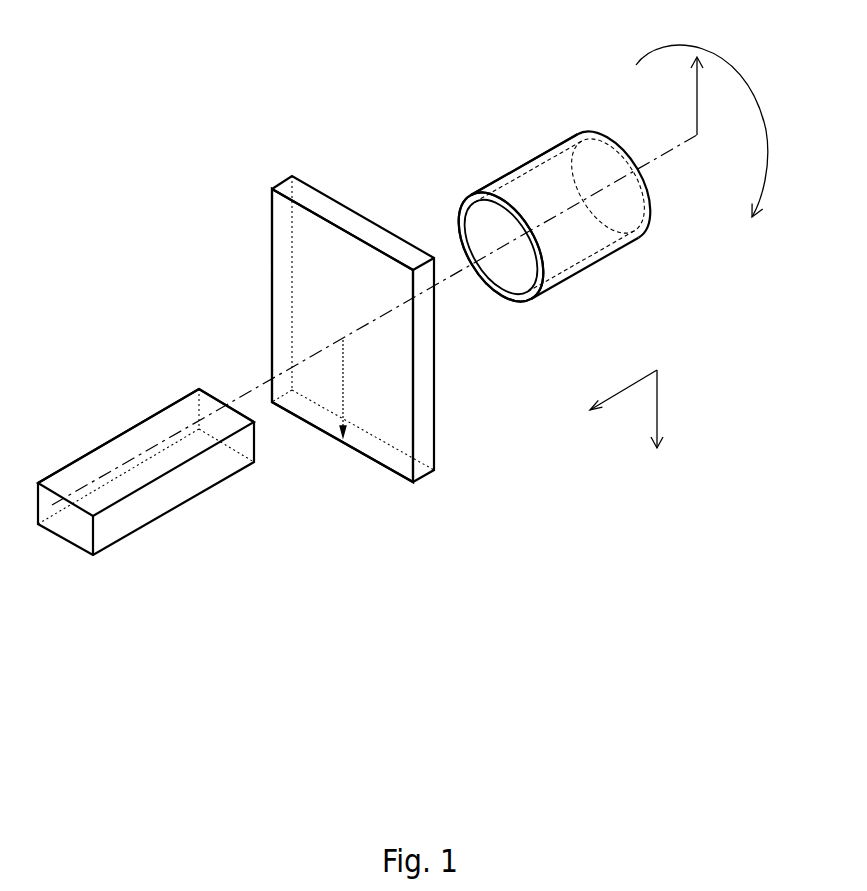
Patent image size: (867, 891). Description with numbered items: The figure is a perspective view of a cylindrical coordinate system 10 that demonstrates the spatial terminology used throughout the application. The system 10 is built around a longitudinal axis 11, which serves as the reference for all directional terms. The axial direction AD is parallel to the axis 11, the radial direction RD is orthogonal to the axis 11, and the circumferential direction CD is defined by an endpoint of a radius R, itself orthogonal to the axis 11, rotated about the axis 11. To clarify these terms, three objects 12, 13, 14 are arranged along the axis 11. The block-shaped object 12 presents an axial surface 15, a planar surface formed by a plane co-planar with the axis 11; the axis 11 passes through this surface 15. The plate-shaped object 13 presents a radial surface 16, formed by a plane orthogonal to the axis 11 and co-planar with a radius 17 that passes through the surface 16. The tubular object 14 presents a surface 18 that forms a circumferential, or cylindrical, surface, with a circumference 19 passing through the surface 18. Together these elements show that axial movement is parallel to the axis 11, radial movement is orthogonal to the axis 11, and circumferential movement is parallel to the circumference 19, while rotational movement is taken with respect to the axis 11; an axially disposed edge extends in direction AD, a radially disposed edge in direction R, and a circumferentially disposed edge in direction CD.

The cylindrical coordinate system 10 is at (226, 216).
The longitudinal axis 11 is at (640, 167).
The object 12 is at (117, 543).
The object 13 is at (444, 475).
The object 14 is at (586, 283).
The axial surface 15 is at (110, 455).
The radial surface 16 is at (285, 293).
The radius 17 is at (343, 387).
The circumferential surface 18 is at (527, 163).
The circumference 19 is at (460, 217).
The radius R is at (697, 90).
The circumferential direction CD is at (730, 80).
The axial direction AD is at (625, 390).
The radial direction RD is at (660, 405).